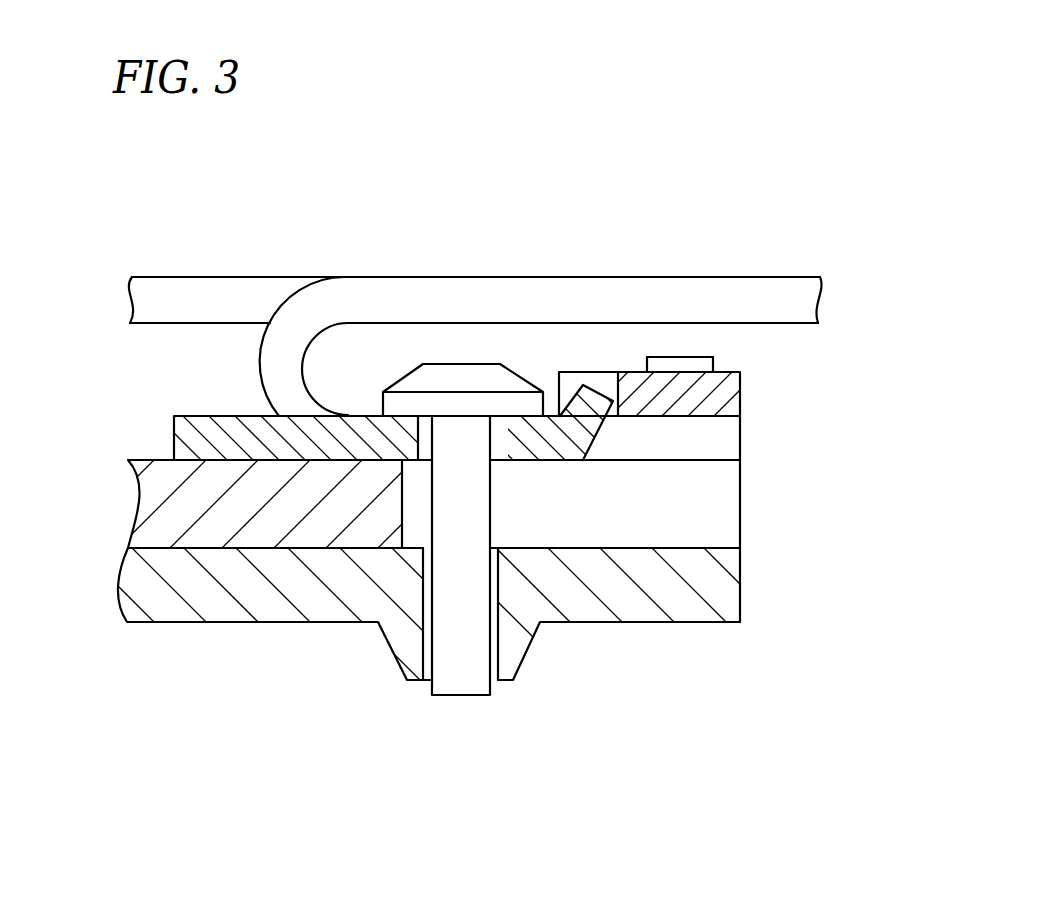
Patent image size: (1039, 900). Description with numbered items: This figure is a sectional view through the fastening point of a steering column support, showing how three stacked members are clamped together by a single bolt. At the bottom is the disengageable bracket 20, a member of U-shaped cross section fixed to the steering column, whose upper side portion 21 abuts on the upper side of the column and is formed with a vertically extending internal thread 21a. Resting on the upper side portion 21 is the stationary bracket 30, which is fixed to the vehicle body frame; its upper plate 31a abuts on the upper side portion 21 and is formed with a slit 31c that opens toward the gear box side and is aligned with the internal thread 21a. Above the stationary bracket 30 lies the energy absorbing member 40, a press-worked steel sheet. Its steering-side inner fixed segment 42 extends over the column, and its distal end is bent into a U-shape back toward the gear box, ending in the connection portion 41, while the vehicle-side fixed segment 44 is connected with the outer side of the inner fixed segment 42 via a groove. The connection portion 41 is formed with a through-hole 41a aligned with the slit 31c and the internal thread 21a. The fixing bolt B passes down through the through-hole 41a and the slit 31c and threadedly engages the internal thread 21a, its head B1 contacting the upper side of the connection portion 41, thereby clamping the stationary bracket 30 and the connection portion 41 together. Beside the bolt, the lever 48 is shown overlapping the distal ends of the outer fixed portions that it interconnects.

The disengageable bracket 20 is at (453, 658).
The upper side portion 21 is at (663, 639).
The internal thread 21a is at (433, 662).
The stationary bracket 30 is at (452, 594).
The upper plate 31a is at (335, 512).
The slit 31c is at (717, 495).
The energy absorbing member 40 is at (493, 218).
The connection portion 41 is at (193, 400).
The through-hole 41a is at (417, 457).
The steering-side inner fixed segment 42 is at (753, 302).
The vehicle-side fixed segment 44 is at (222, 293).
The lever 48 is at (755, 404).
The fixing bolt B is at (463, 514).
The head B1 is at (462, 390).